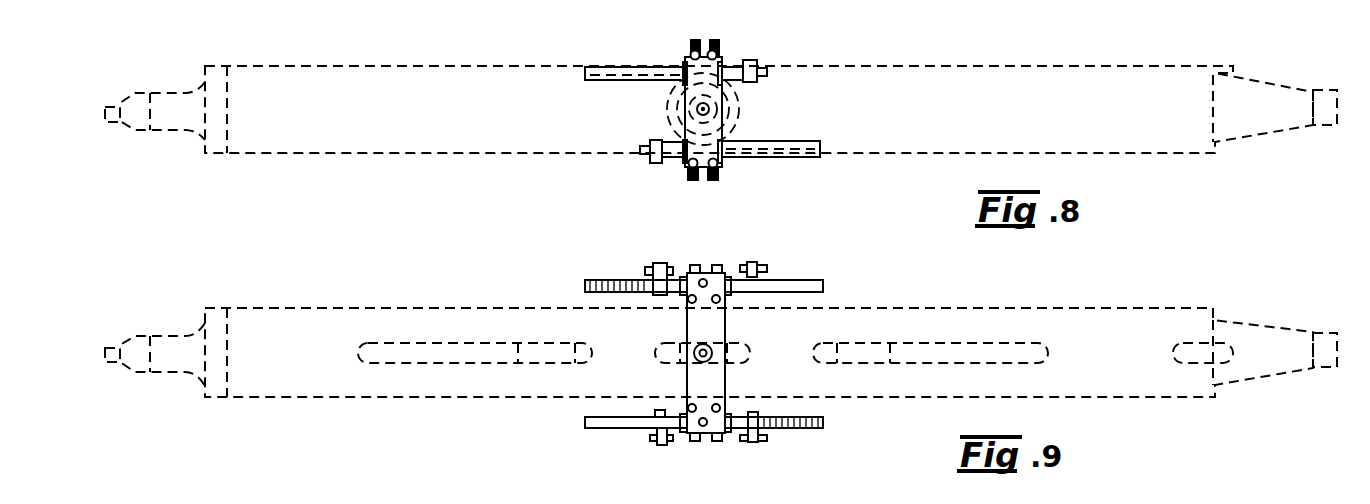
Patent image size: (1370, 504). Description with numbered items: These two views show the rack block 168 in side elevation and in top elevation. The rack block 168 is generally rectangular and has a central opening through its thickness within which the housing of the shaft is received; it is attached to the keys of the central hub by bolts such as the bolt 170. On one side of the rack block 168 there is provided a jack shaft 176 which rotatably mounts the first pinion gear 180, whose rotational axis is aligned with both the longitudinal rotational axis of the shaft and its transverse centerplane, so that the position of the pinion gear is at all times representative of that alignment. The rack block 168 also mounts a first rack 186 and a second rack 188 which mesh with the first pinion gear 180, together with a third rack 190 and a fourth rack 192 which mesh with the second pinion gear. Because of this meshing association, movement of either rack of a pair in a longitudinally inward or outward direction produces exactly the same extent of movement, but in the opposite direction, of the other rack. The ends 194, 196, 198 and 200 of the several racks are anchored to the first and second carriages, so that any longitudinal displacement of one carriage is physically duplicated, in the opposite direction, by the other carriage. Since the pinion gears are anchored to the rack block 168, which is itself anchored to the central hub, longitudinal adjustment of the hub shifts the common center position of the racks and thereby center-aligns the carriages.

In FIG. 8, the rack block 168 is at (698, 72).
In FIG. 9, the rack block 168 is at (727, 383).
In FIG. 9, the bolt 170 is at (711, 347).
In FIG. 8, the jack shaft 176 is at (712, 109).
In FIG. 8, the first pinion gear 180 is at (743, 115).
In FIG. 9, the first rack 186 is at (812, 281).
In FIG. 9, the second rack 188 is at (610, 279).
In FIG. 8, the third rack 190 is at (792, 153).
In FIG. 9, the third rack 190 is at (797, 429).
In FIG. 9, the fourth rack 192 is at (600, 429).
In FIG. 9, the rack end 194 is at (658, 263).
In FIG. 9, the rack end 196 is at (750, 260).
In FIG. 9, the rack end 198 is at (658, 445).
In FIG. 8, the rack end 200 is at (750, 60).
In FIG. 9, the rack end 200 is at (750, 443).